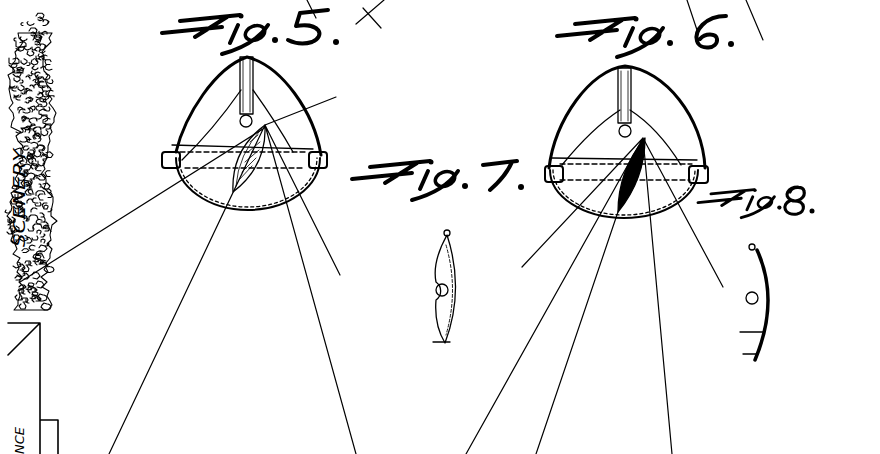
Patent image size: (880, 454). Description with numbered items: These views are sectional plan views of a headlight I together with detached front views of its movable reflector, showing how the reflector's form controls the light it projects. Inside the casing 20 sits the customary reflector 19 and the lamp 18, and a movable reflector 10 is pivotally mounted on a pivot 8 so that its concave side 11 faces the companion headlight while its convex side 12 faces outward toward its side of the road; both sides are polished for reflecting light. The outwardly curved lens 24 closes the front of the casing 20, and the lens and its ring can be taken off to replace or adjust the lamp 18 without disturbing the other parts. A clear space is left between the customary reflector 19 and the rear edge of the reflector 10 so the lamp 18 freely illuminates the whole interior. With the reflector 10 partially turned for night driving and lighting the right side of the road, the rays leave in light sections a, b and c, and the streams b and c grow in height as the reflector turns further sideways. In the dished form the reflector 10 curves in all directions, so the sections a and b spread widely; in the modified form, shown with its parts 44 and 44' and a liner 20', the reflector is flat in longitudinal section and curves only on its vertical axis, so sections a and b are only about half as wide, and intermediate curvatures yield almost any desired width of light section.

In FIG. 5, the pivot 8 is at (170, 160).
In FIG. 6, the pivot 8 is at (624, 156).
In FIG. 5, the reflector 10 is at (236, 186).
In FIG. 7, the reflector 10 is at (452, 323).
In FIG. 5, the concave side 11 is at (235, 173).
In FIG. 7, the concave side 11 is at (443, 313).
In FIG. 5, the convex side 12 is at (258, 145).
In FIG. 7, the convex side 12 is at (447, 268).
In FIG. 5, the lamp 18 is at (240, 122).
In FIG. 6, the lamp 18 is at (619, 135).
In FIG. 7, the lamp 18 is at (436, 290).
In FIG. 8, the lamp 18 is at (746, 302).
In FIG. 5, the customary reflector 19 is at (310, 92).
In FIG. 6, the customary reflector 19 is at (664, 141).
In FIG. 5, the casing 20 is at (248, 106).
In FIG. 6, the casing 20 is at (627, 117).
In FIG. 5, the hood inner reflector 20' is at (231, 112).
In FIG. 6, the hood inner reflector 20' is at (611, 126).
In FIG. 5, the lens 24 is at (260, 208).
In FIG. 6, the lens 24 is at (633, 220).
In FIG. 6, the opaque blade 44 is at (625, 175).
In FIG. 8, the opaque blade 44 is at (770, 302).
In FIG. 8, the blade foot 44' is at (731, 345).
In FIG. 5, the left-hand headlight I is at (312, 107).
In FIG. 6, the left-hand headlight I is at (684, 105).
In FIG. 5, the light section a is at (330, 364).
In FIG. 6, the light section a is at (666, 385).
In FIG. 5, the light section b is at (169, 323).
In FIG. 6, the light section b is at (573, 343).
In FIG. 5, the light section c is at (333, 247).
In FIG. 6, the light section c is at (708, 255).